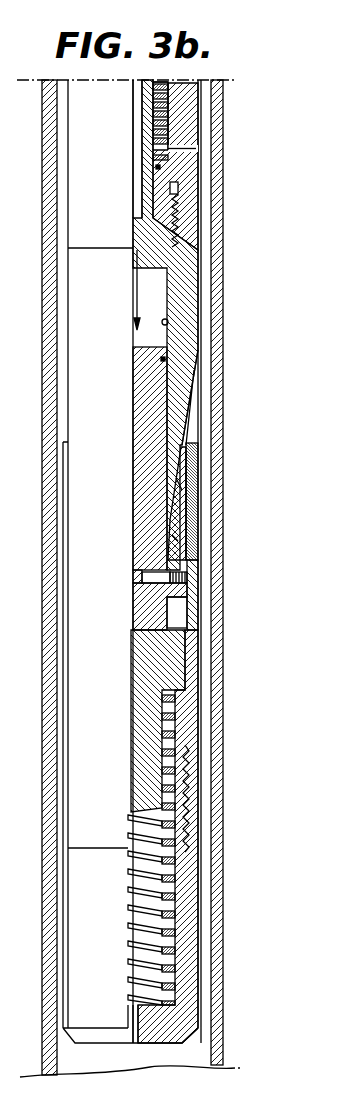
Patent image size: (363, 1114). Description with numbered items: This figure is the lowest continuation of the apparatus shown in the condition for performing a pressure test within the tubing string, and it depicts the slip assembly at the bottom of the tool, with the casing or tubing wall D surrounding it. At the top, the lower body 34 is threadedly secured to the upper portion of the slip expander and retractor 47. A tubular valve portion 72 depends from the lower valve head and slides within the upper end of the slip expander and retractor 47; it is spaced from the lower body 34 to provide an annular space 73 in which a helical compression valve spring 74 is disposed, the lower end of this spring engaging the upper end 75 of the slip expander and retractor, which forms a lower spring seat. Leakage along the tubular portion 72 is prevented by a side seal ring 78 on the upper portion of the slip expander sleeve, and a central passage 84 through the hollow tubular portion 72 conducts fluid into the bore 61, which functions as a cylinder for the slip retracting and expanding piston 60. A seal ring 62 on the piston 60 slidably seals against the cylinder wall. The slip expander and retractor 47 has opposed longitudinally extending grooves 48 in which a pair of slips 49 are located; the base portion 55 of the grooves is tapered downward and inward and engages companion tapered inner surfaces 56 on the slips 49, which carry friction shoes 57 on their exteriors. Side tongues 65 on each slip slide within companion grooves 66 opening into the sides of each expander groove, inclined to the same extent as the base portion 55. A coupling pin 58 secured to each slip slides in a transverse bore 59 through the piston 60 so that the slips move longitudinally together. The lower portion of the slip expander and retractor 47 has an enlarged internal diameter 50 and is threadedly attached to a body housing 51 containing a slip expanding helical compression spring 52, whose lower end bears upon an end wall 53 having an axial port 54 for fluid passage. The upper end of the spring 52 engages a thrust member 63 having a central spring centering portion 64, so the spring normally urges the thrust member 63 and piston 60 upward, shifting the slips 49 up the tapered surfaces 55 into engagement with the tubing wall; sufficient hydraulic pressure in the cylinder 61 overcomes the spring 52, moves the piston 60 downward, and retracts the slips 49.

The well casing D is at (214, 238).
The central passage 84 is at (133, 92).
The slip expander and retractor 47 is at (182, 272).
The lower body 34 is at (190, 120).
The helical compression valve spring 74 is at (155, 127).
The annular space 73 is at (168, 87).
The tubular valve portion 72 is at (150, 83).
The upper end of the slip expander and retractor 75 is at (166, 159).
The side seal ring 78 is at (160, 170).
The bore 61 is at (170, 322).
The seal ring 62 is at (166, 360).
The slip retracting and expanding piston 60 is at (148, 412).
The grooves 66 is at (192, 410).
The longitudinally extending grooves 48 is at (194, 440).
The tapered inner surfaces 56 is at (182, 462).
The friction shoes 57 is at (192, 520).
The base portion 55 is at (178, 482).
The side tongues 65 is at (176, 538).
The slips 49 is at (182, 557).
The transverse bore 59 is at (141, 575).
The coupling pin 58 is at (152, 587).
The enlarged internal diameter 50 is at (183, 617).
The thrust member 63 is at (170, 678).
The spring centering portion 64 is at (147, 778).
The body housing 51 is at (185, 907).
The slip expanding helical compression spring 52 is at (173, 967).
The axial port 54 is at (128, 1036).
The end wall 53 is at (170, 1035).